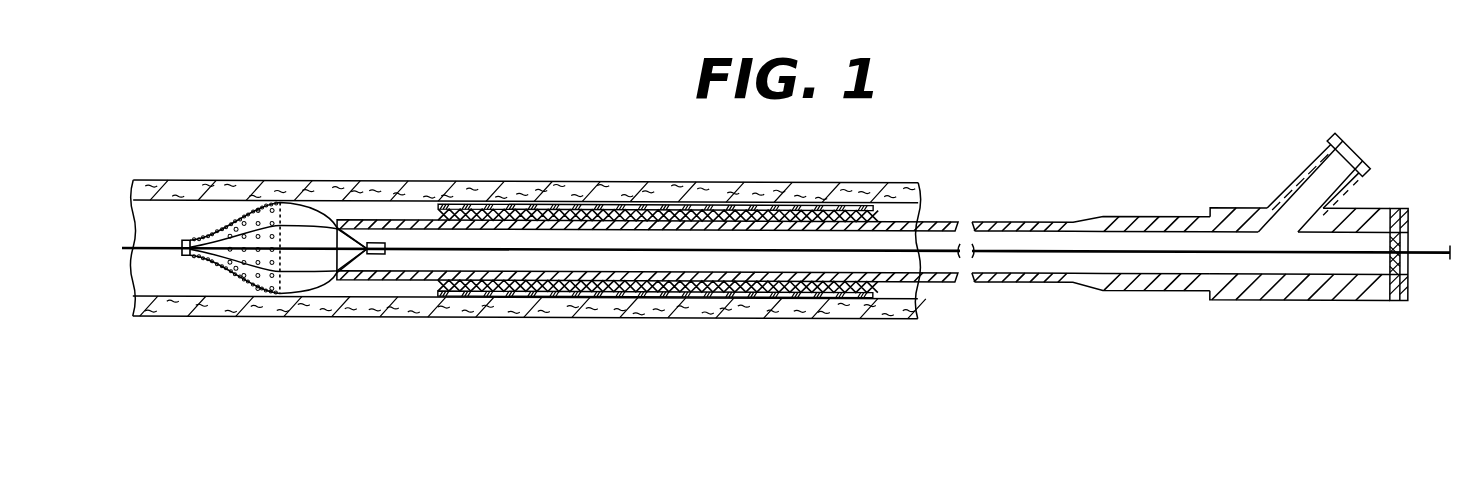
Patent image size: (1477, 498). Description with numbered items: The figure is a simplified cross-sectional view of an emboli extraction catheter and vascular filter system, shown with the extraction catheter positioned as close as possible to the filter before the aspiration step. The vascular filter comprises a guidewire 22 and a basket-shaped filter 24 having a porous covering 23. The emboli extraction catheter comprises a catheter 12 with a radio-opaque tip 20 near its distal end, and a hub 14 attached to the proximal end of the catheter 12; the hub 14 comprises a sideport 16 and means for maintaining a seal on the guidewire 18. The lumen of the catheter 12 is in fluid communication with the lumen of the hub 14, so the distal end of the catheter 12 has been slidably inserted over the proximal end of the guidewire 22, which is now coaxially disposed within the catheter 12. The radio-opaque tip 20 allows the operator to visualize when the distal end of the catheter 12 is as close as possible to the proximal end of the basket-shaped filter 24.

The catheter 12 is at (940, 218).
The hub 14 is at (1298, 297).
The sideport 16 is at (1306, 174).
The means for maintaining a seal on the guidewire 18 is at (1404, 264).
The radio-opaque tip 20 is at (362, 220).
The guidewire 22 is at (1046, 250).
The porous covering 23 is at (222, 277).
The basket-shaped filter 24 is at (263, 298).